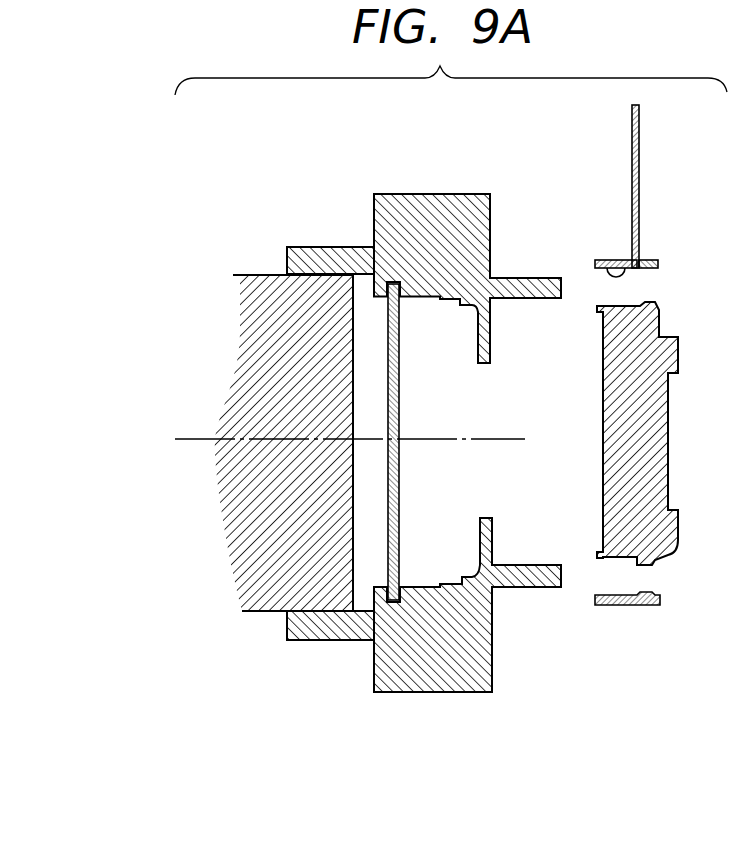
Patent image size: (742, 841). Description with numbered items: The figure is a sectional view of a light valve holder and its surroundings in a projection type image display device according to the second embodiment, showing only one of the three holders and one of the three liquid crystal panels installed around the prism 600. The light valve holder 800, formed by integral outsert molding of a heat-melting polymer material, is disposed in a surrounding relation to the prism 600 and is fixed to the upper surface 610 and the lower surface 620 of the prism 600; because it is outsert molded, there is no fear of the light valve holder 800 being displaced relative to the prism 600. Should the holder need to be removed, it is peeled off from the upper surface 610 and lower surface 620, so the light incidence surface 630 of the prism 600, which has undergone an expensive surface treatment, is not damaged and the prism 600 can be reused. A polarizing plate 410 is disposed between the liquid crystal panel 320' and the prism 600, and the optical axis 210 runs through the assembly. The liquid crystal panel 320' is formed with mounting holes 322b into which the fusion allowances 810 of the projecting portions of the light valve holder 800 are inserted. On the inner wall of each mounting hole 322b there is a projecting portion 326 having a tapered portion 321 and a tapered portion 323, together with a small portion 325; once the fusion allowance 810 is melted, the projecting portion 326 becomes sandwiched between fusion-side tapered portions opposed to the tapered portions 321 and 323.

The optical axis 210 is at (448, 440).
The prism 600 is at (320, 573).
The upper surface 610 is at (277, 273).
The lower surface 620 is at (260, 613).
The light incidence surface 630 is at (353, 525).
The light valve holder 800 is at (428, 655).
The fusion allowance 810 is at (523, 590).
The polarizing plate 410 is at (400, 385).
The liquid crystal panel 320' is at (628, 480).
The tapered portion 321 is at (658, 268).
The tapered portion 323 is at (640, 262).
The solder bump 325 is at (603, 260).
The projecting portion 326 is at (640, 272).
The mounting hole 322b is at (612, 290).